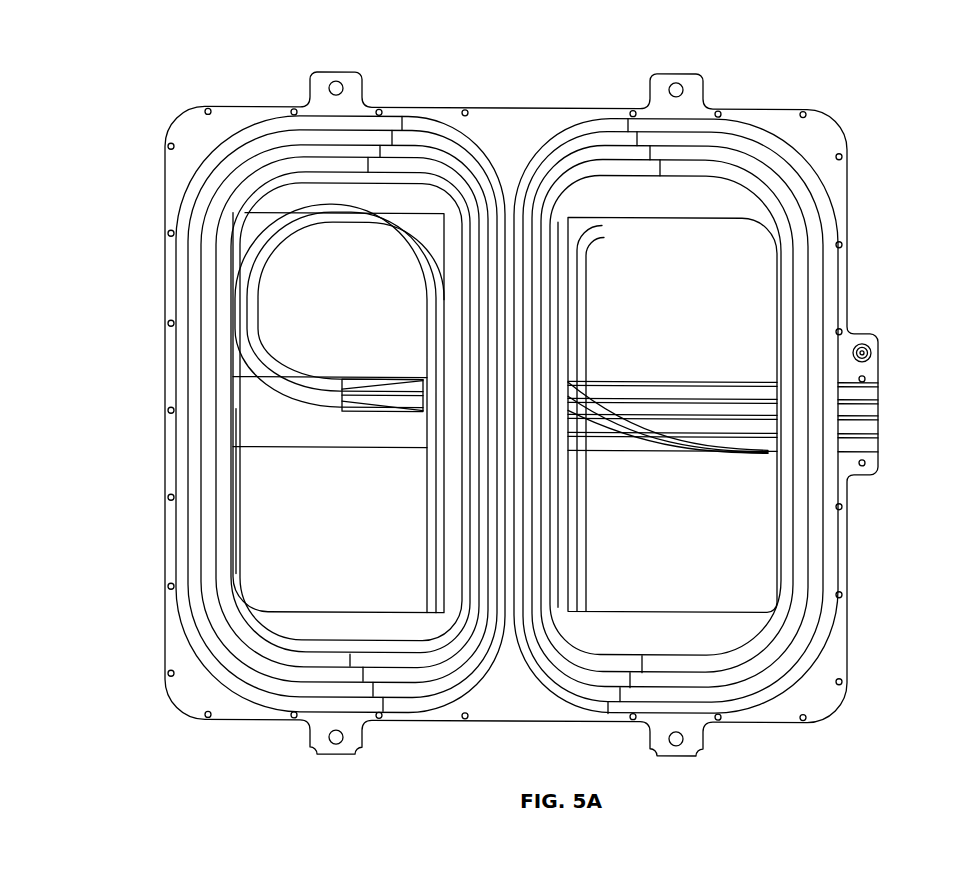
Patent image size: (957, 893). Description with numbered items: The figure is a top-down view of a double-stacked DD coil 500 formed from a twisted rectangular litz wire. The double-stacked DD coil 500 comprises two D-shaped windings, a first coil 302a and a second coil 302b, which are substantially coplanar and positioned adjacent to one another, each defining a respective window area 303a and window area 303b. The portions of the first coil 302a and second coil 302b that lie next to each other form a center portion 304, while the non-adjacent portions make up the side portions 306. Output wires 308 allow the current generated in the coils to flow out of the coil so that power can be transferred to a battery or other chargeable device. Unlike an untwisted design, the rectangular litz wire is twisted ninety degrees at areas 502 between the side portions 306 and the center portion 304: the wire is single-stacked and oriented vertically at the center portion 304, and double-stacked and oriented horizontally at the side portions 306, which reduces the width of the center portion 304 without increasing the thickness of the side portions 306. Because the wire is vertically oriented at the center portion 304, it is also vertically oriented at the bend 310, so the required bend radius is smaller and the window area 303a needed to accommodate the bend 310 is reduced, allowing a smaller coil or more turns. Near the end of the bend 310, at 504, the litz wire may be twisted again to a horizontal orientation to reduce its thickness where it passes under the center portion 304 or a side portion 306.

The double-stacked DD coil 500 is at (840, 735).
The first coil 302a is at (282, 65).
The second coil 302b is at (756, 70).
The window area 303a is at (245, 580).
The window area 303b is at (768, 312).
The center portion 304 is at (515, 430).
The side portions 306 is at (190, 451).
The output wires 308 is at (863, 395).
The bend 310 is at (258, 258).
The area 502 is at (575, 200).
The twist location 504 is at (380, 378).